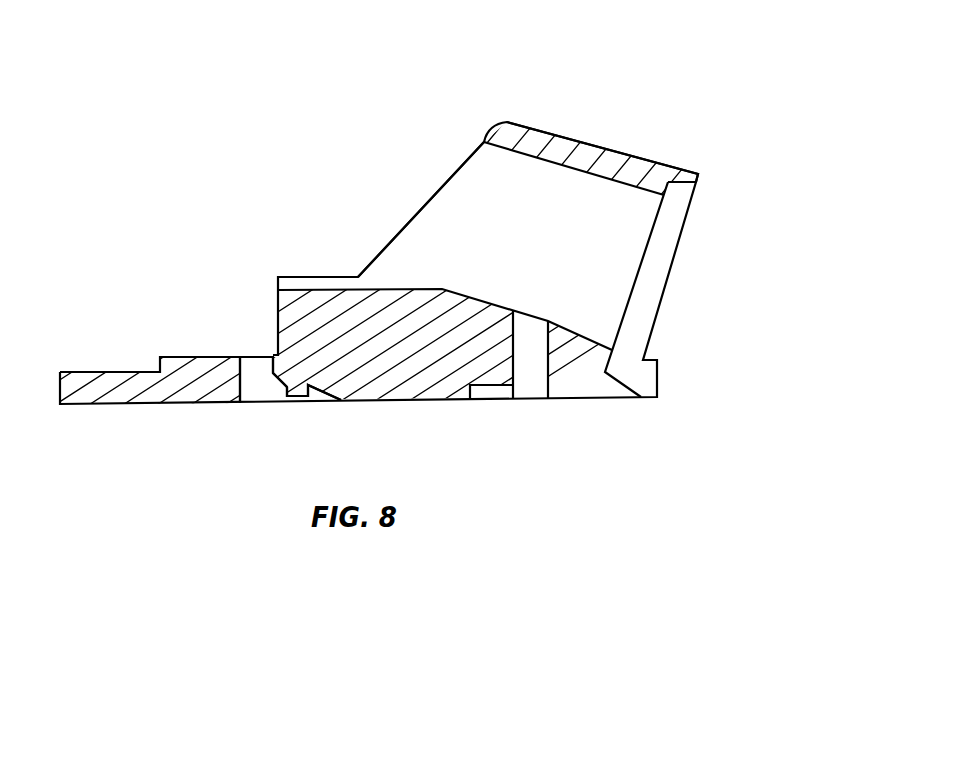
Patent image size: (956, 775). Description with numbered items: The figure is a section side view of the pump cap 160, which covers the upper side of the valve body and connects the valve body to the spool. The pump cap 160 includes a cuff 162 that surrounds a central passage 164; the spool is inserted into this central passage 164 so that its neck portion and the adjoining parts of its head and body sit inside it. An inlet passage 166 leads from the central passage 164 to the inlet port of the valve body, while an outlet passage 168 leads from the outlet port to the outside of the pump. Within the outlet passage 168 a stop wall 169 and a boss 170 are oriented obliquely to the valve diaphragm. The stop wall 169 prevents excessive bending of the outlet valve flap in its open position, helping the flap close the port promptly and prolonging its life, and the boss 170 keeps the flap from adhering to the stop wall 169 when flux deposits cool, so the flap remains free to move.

The pump cap 160 is at (630, 108).
The cuff 162 is at (548, 132).
The central passage 164 is at (558, 244).
The inlet passage 166 is at (530, 383).
The outlet passage 168 is at (255, 354).
The stop wall 169 is at (279, 379).
The boss 170 is at (292, 396).